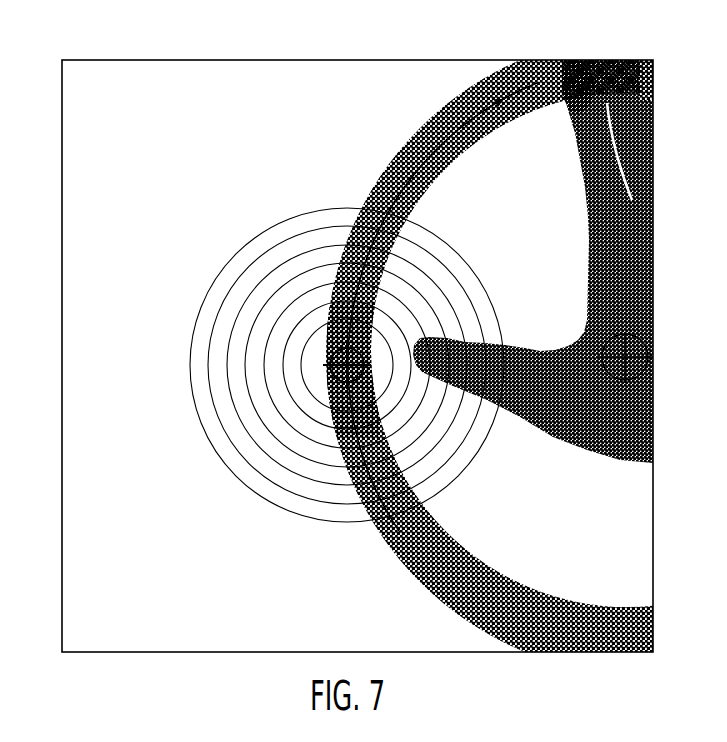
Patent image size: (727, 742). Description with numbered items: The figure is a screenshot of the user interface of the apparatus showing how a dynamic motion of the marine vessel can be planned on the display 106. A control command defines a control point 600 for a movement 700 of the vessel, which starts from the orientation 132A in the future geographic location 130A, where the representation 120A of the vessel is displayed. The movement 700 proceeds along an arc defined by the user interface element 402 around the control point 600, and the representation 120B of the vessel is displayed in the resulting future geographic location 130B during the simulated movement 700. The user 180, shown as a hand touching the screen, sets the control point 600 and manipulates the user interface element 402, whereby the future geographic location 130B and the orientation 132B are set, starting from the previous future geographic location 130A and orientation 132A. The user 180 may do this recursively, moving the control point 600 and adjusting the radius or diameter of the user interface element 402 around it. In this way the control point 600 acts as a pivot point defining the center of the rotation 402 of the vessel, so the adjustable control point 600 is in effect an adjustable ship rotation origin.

The display screen 106 is at (62, 86).
The user interface element 402 is at (398, 153).
The movement 700 is at (398, 205).
The orientation 132A is at (352, 318).
The representation of the marine vessel 120A is at (378, 358).
The future geographic location 130A is at (345, 366).
The orientation 132B is at (647, 80).
The user 180 is at (587, 228).
The representation of the marine vessel 120B is at (588, 60).
The future geographic location 130B is at (590, 87).
The control point 600 is at (602, 360).